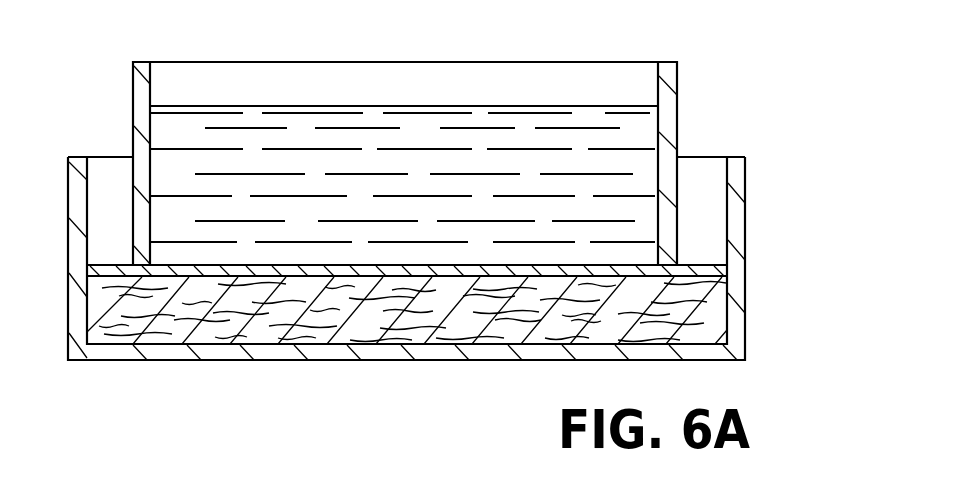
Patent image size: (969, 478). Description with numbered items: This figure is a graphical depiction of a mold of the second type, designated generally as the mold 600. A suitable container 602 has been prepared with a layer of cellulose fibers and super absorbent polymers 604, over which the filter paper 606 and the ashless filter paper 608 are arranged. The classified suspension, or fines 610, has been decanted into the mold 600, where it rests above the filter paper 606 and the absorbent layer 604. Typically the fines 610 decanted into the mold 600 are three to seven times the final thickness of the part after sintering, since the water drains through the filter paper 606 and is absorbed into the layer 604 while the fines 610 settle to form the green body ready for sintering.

The mold of type 2 600 is at (742, 61).
The container 602 is at (745, 217).
The layer of cellulose fibers and super absorbent polymers 604 is at (703, 327).
The filter paper 606 is at (703, 266).
The ashless filter paper 608 is at (133, 107).
The classified suspension (fines) 610 is at (433, 107).